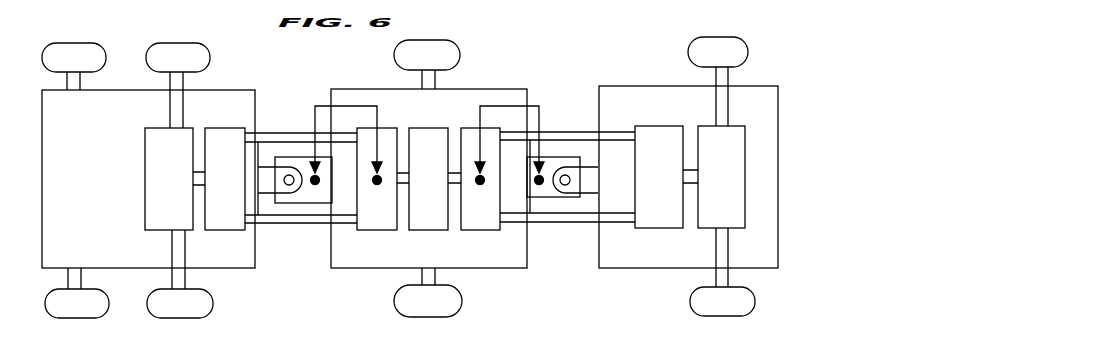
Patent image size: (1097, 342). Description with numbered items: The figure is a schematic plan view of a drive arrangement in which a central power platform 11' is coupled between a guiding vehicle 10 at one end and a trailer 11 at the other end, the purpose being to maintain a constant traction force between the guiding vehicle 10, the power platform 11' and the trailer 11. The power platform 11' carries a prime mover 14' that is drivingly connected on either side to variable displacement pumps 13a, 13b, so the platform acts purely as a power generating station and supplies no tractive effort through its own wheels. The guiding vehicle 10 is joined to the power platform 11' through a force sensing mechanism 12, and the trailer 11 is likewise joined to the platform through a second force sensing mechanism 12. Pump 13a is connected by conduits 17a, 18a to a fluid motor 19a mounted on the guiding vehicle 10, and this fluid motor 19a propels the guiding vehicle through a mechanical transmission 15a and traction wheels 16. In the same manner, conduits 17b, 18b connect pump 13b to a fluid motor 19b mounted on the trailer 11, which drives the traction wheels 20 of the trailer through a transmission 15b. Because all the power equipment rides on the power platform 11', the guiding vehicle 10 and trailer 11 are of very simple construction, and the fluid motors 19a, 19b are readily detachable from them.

The guiding vehicle 10 is at (138, 273).
The trailer 11 is at (688, 195).
The power platform 11' is at (430, 178).
The force sensing mechanism 12 is at (318, 195).
The variable displacement pump 13a is at (370, 226).
The variable displacement pump 13b is at (483, 226).
The prime mover 14' is at (435, 194).
The mechanical transmission 15a is at (152, 166).
The transmission 15b is at (736, 128).
The traction wheels 16 is at (186, 47).
The conduit 17a is at (276, 135).
The conduit 17b is at (563, 132).
The conduit 18a is at (284, 217).
The conduit 18b is at (584, 223).
The fluid motor 19a is at (222, 128).
The fluid motor 19b is at (652, 128).
The traction wheels 20 is at (738, 44).